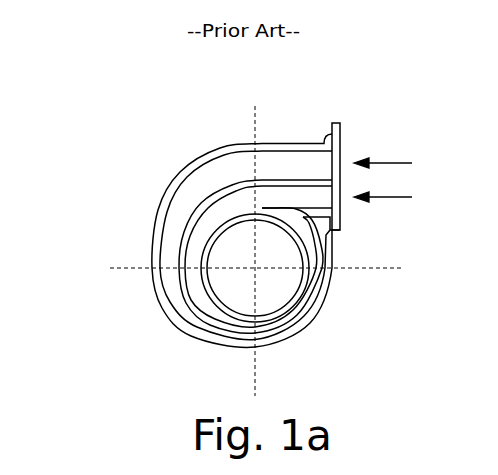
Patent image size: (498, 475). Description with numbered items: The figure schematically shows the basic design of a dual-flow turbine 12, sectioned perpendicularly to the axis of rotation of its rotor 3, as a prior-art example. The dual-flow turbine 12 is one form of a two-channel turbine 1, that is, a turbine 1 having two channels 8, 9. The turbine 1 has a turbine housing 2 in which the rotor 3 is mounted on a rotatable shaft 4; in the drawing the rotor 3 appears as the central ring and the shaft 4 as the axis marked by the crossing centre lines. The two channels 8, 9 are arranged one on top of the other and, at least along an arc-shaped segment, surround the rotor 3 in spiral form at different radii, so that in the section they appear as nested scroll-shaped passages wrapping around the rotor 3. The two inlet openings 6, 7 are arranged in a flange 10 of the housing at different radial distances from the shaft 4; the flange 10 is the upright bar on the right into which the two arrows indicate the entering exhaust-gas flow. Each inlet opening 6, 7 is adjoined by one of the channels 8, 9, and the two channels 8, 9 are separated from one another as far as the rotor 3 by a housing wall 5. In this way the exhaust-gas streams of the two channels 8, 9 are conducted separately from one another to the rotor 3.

The two-channel turbine 1 is at (233, 236).
The dual-flow turbine 12 is at (138, 156).
The turbine housing 2 is at (322, 228).
The rotor 3 is at (282, 295).
The shaft 4 is at (253, 270).
The housing wall 5 is at (175, 252).
The inlet opening 6 is at (347, 197).
The inlet opening 7 is at (342, 158).
The channel 8 is at (248, 197).
The channel 9 is at (210, 150).
The flange 10 is at (342, 137).